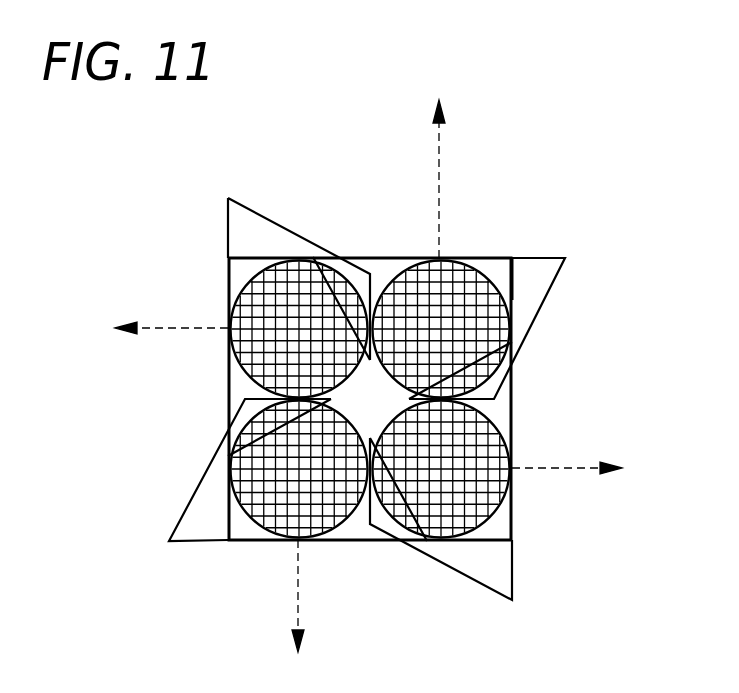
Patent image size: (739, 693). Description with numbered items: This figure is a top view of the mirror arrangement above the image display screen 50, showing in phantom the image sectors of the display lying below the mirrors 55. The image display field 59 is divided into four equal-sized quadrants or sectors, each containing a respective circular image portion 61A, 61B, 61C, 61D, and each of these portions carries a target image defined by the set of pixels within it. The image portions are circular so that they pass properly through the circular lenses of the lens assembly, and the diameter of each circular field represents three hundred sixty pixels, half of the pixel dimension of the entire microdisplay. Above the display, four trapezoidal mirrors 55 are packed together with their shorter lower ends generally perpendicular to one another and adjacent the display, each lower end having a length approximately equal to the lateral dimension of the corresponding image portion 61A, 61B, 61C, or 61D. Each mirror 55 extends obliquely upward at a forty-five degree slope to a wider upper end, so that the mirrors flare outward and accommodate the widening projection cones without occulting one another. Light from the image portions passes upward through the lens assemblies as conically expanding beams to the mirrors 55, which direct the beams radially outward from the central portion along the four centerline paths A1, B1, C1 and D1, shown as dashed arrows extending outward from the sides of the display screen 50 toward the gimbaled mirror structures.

The image display screen 50 is at (515, 303).
The mirror 55 is at (265, 233).
The image display field 59 is at (516, 280).
The image portion 61A is at (252, 302).
The image portion 61B is at (265, 423).
The image portion 61C is at (460, 273).
The image portion 61D is at (457, 460).
The centerline path A1 is at (186, 327).
The centerline path B1 is at (300, 582).
The centerline path C1 is at (440, 168).
The centerline path D1 is at (583, 468).